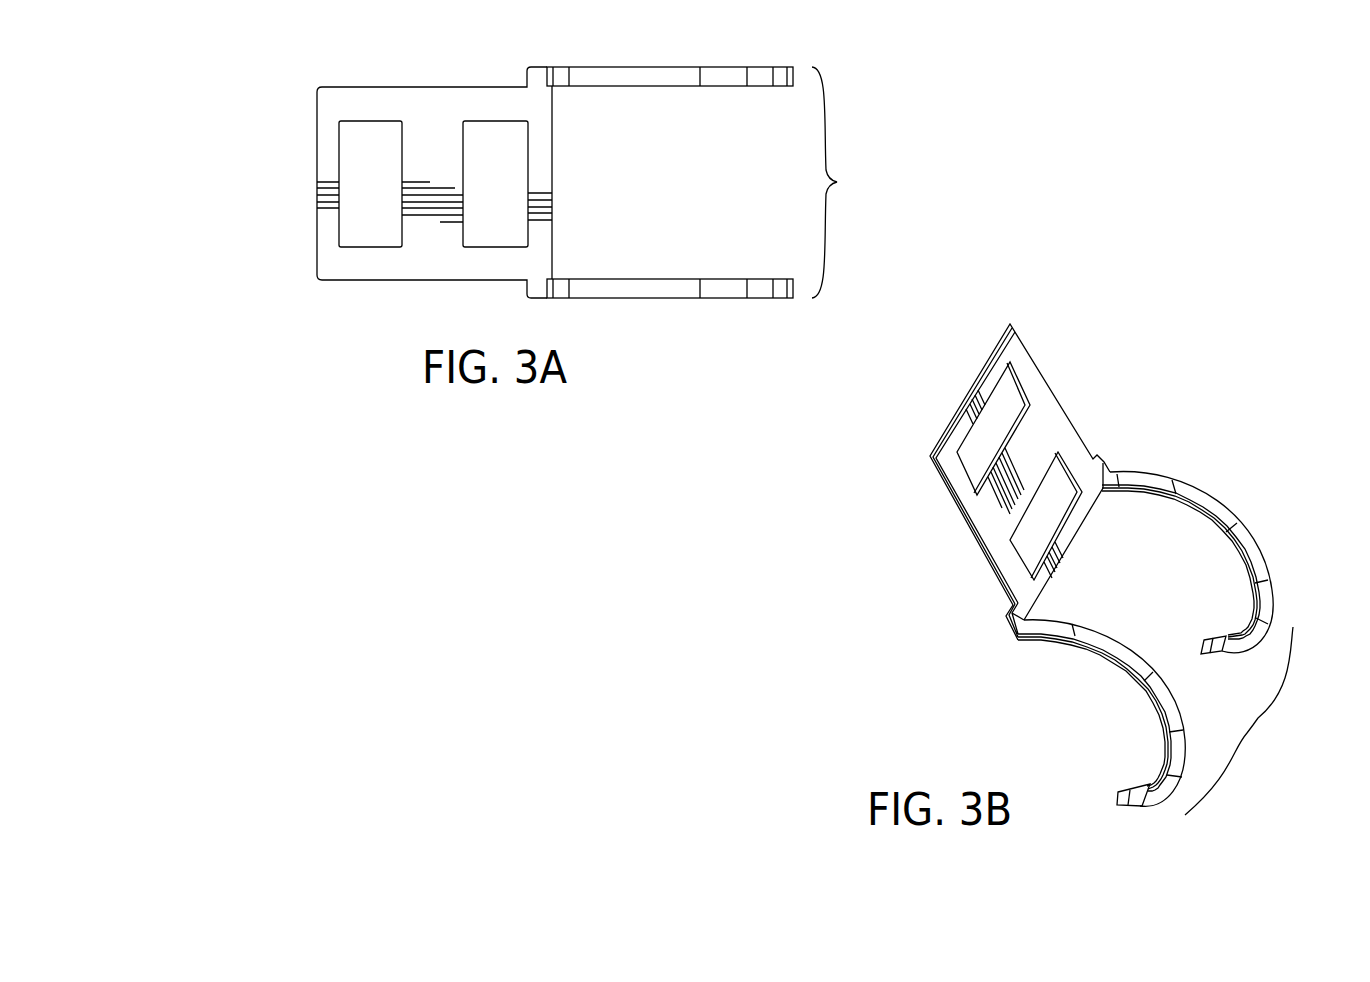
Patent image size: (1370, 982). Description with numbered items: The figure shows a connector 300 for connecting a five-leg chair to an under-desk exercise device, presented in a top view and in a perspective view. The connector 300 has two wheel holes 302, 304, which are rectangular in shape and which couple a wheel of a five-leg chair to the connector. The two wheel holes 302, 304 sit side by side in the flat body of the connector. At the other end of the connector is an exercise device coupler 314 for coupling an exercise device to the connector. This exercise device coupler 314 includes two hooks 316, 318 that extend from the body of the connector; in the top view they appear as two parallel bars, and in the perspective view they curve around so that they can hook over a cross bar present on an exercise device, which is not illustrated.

In FIG. 3A, the connector 300 is at (789, 43).
In FIG. 3B, the connector 300 is at (920, 499).
In FIG. 3A, the wheel hole 302 is at (350, 152).
In FIG. 3B, the wheel hole 302 is at (1012, 395).
In FIG. 3A, the wheel hole 304 is at (497, 237).
In FIG. 3B, the wheel hole 304 is at (1060, 478).
In FIG. 3A, the exercise device coupler 314 is at (844, 182).
In FIG. 3B, the exercise device coupler 314 is at (1242, 721).
In FIG. 3A, the hook 316 is at (680, 78).
In FIG. 3B, the hook 316 is at (1203, 507).
In FIG. 3A, the hook 318 is at (712, 283).
In FIG. 3B, the hook 318 is at (1073, 636).